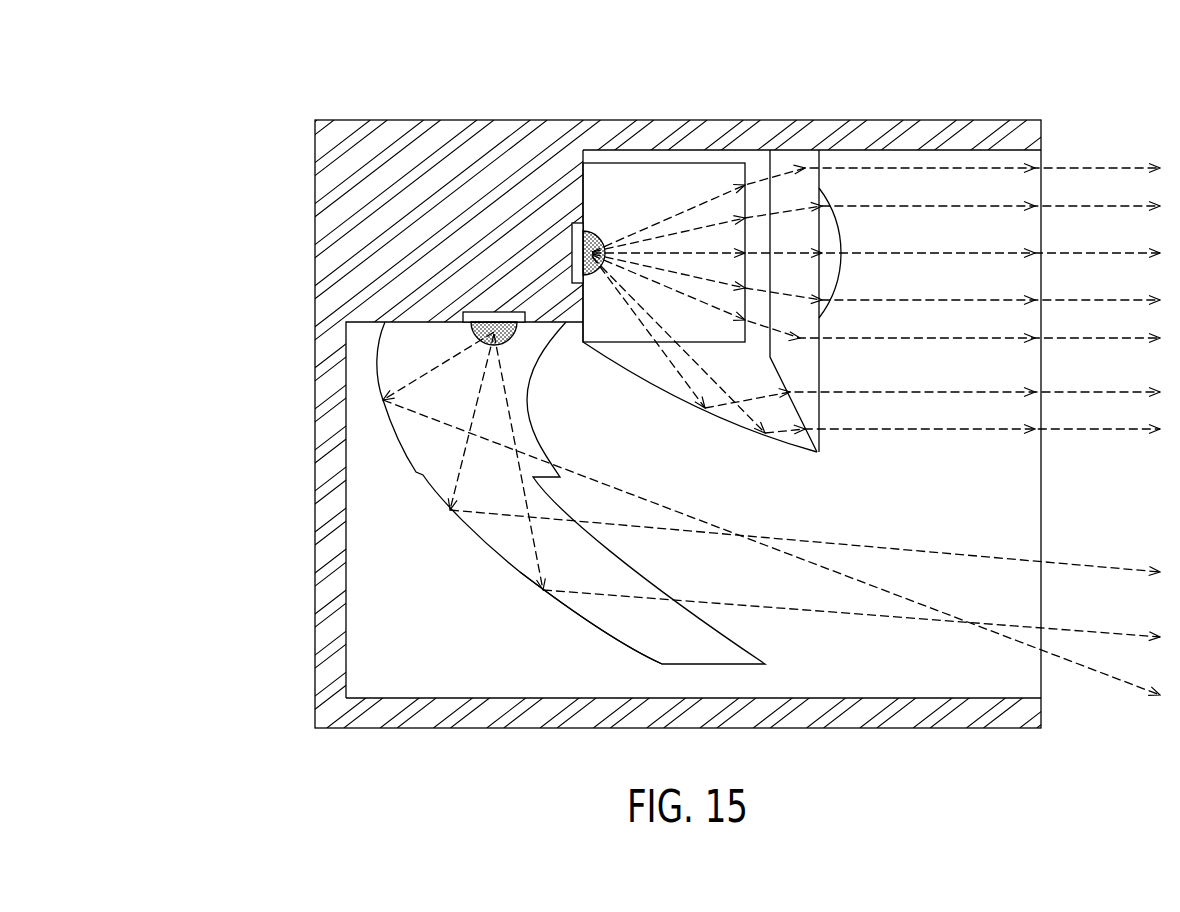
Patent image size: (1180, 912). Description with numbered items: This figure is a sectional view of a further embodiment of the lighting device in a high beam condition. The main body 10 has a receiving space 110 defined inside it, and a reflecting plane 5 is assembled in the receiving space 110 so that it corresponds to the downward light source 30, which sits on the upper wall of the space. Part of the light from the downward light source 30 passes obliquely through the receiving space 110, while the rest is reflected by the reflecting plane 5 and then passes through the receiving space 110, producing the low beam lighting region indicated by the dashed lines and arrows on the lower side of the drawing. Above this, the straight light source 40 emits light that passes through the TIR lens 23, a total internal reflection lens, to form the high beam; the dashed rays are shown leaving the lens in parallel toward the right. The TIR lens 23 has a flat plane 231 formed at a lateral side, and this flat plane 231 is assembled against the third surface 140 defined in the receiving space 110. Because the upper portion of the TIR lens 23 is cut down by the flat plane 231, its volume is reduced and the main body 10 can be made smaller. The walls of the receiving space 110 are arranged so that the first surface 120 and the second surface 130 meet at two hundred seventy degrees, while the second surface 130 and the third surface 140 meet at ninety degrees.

The main body 10 is at (236, 514).
The receiving space 110 is at (432, 664).
The first surface 120 is at (375, 322).
The second surface 130 is at (583, 195).
The third surface 140 is at (667, 155).
The flat plane 231 is at (707, 153).
The TIR lens 23 is at (807, 188).
The downward light source 30 is at (493, 320).
The straight light source 40 is at (575, 247).
The reflecting plane 5 is at (623, 632).